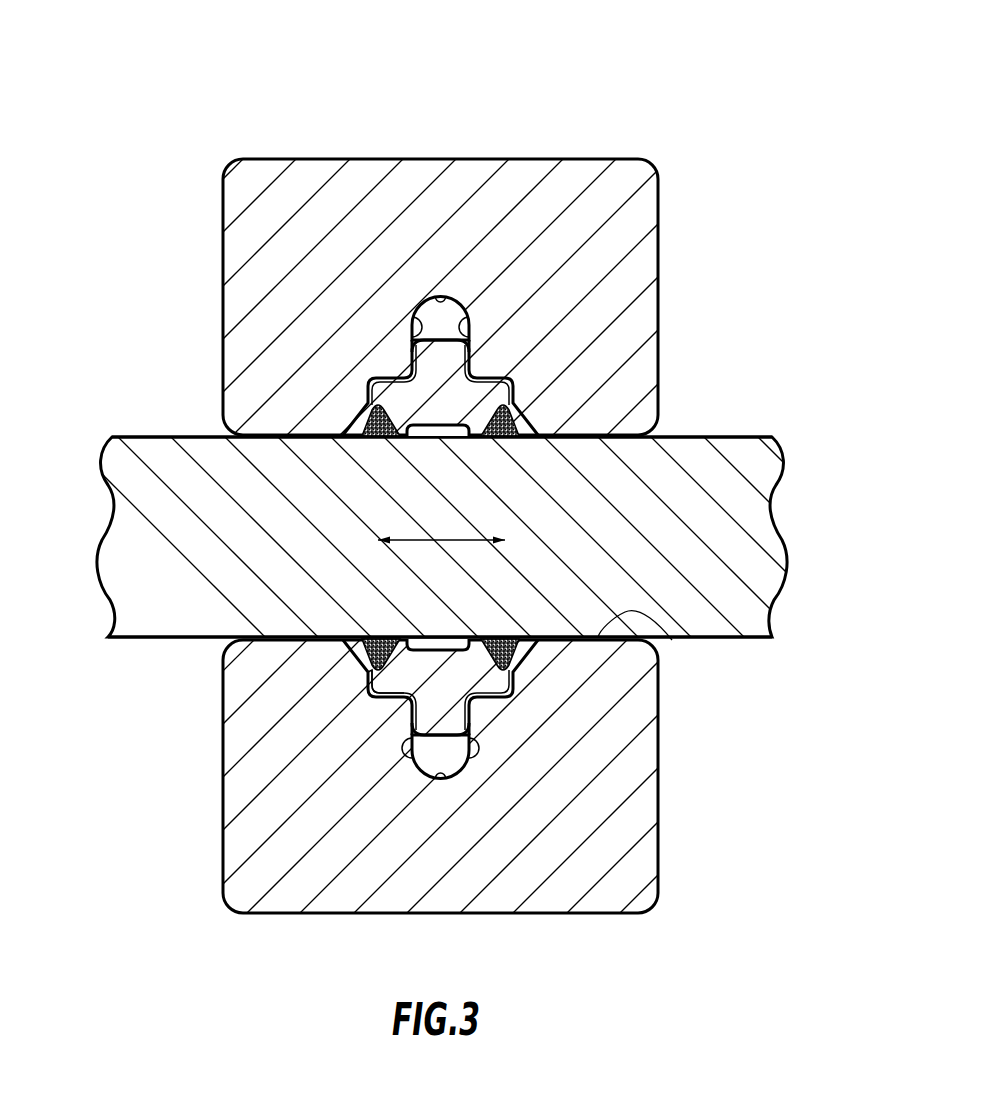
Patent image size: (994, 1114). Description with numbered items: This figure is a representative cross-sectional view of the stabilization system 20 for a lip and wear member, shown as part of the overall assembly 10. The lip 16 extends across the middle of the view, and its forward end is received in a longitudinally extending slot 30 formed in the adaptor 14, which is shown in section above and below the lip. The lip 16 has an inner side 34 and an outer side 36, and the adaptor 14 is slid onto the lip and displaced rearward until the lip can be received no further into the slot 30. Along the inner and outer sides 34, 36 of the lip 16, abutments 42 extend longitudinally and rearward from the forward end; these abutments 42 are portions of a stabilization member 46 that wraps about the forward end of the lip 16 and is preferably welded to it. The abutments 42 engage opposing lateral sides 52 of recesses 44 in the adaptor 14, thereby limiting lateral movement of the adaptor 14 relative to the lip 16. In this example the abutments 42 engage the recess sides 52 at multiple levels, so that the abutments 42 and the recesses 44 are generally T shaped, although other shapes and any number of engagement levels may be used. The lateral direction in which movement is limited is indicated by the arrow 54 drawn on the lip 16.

The seal assembly 10 is at (155, 95).
The adaptor 14 is at (601, 155).
The lip 16 is at (747, 432).
The stabilization system 20 is at (545, 340).
The slot 30 is at (672, 640).
The inner side of lip 34 is at (135, 436).
The outer side of lip 36 is at (130, 642).
The abutments 42 is at (367, 392).
The recesses 44 is at (446, 300).
The stabilization member 46 is at (362, 684).
The lateral sides of recesses 52 is at (413, 325).
The arrow 54 is at (410, 542).